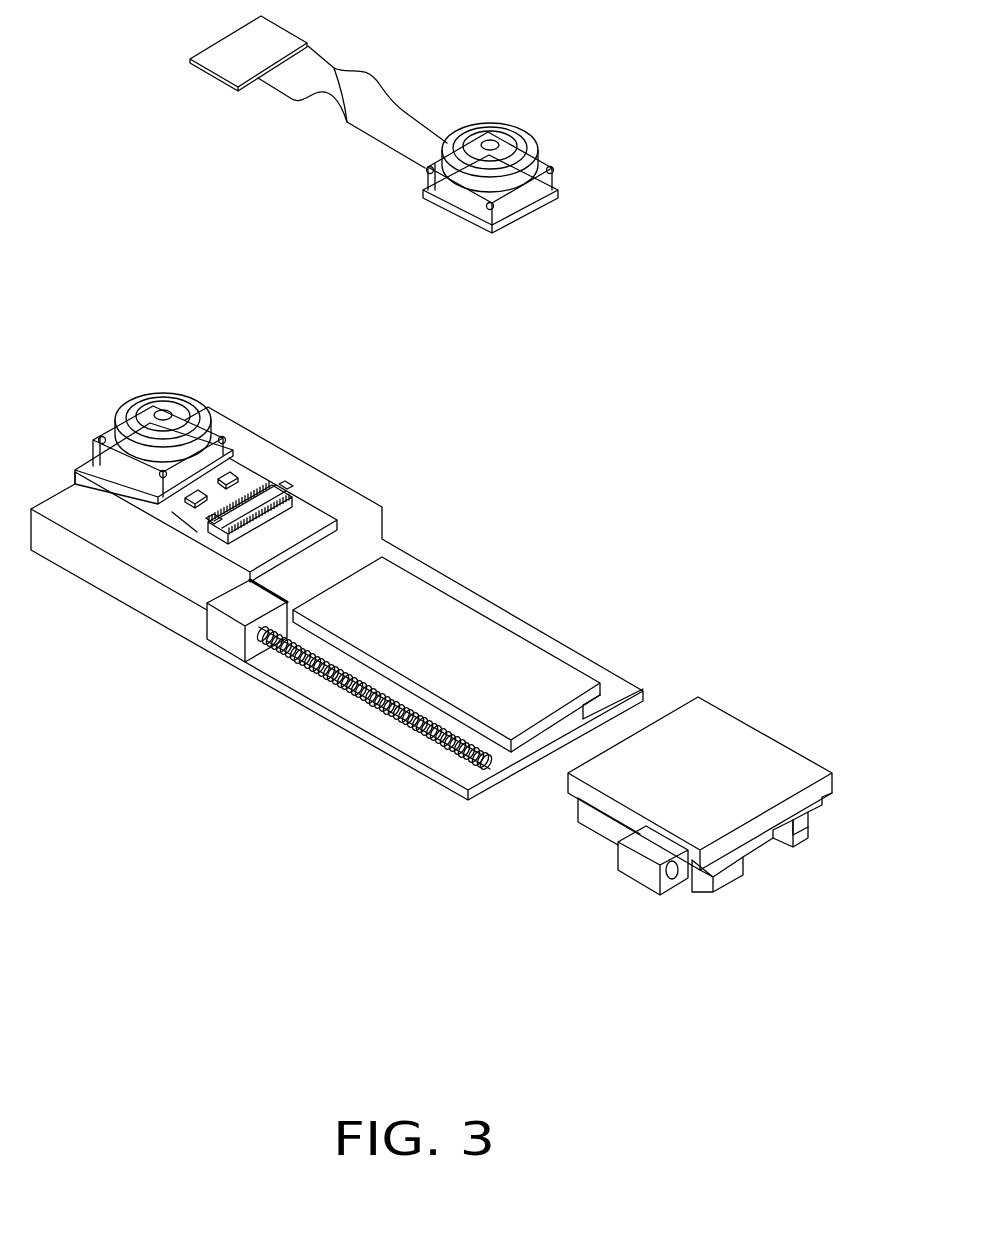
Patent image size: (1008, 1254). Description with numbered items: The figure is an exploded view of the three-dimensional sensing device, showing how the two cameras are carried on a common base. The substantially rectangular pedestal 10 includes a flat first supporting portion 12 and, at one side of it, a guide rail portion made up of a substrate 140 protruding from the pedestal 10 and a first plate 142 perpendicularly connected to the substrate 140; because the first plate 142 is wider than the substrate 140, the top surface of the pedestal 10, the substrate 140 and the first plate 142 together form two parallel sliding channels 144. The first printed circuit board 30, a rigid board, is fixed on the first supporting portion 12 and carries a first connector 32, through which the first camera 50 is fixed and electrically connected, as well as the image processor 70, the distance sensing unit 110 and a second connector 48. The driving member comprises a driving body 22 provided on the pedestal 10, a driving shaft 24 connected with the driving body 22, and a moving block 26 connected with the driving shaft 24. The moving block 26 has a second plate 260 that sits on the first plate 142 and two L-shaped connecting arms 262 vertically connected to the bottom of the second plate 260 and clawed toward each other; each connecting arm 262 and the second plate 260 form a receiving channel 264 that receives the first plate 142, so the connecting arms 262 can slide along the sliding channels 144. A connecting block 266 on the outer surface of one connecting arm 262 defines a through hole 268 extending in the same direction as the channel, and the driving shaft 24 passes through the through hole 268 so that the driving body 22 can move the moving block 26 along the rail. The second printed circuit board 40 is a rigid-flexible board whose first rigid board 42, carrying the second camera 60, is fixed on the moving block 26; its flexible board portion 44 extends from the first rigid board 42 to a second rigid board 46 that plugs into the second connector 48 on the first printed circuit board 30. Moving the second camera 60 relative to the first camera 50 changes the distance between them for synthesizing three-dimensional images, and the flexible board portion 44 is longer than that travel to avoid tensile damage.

The pedestal 10 is at (482, 790).
The first supporting portion 12 is at (330, 495).
The driving body 22 is at (220, 634).
The driving shaft 24 is at (410, 731).
The moving block 26 is at (736, 810).
The first printed circuit board 30 is at (127, 515).
The first connector 32 is at (135, 490).
The second printed circuit board 40 is at (395, 146).
The first rigid board 42 is at (473, 184).
The flexible board portion 44 is at (353, 115).
The second rigid board 46 is at (247, 60).
The second connector 48 is at (276, 496).
The first camera 50 is at (157, 403).
The second camera 60 is at (505, 137).
The image processor 70 is at (193, 500).
The distance sensing unit 110 is at (224, 475).
The substrate 140 is at (553, 730).
The first plate 142 is at (440, 637).
The sliding channels 144 is at (605, 698).
The second plate 260 is at (730, 737).
The connecting arms 262 is at (818, 818).
The receiving channel 264 is at (804, 827).
The connecting block 266 is at (658, 905).
The through hole 268 is at (676, 876).